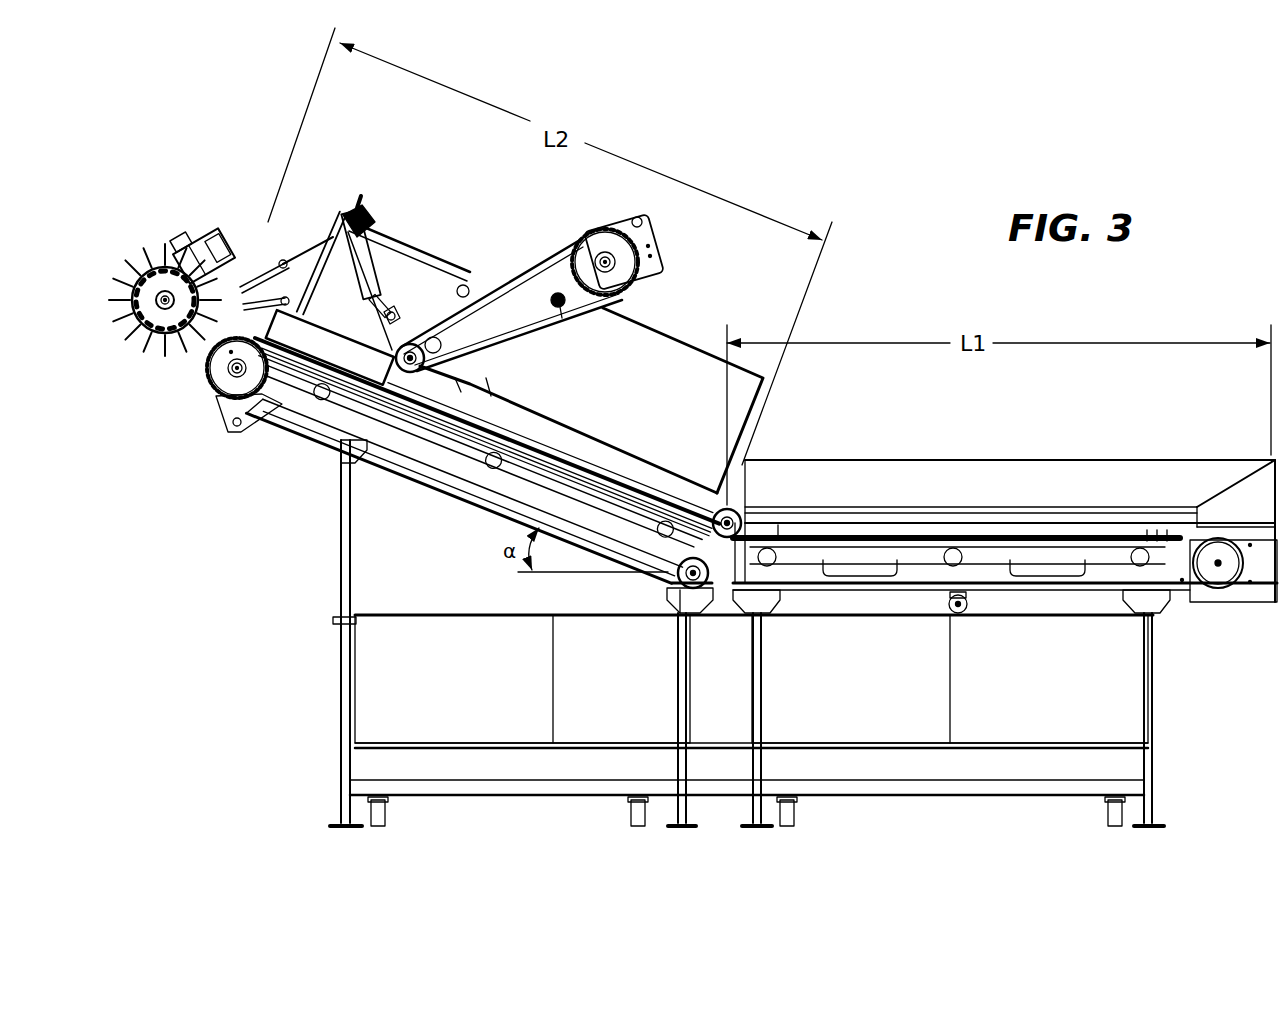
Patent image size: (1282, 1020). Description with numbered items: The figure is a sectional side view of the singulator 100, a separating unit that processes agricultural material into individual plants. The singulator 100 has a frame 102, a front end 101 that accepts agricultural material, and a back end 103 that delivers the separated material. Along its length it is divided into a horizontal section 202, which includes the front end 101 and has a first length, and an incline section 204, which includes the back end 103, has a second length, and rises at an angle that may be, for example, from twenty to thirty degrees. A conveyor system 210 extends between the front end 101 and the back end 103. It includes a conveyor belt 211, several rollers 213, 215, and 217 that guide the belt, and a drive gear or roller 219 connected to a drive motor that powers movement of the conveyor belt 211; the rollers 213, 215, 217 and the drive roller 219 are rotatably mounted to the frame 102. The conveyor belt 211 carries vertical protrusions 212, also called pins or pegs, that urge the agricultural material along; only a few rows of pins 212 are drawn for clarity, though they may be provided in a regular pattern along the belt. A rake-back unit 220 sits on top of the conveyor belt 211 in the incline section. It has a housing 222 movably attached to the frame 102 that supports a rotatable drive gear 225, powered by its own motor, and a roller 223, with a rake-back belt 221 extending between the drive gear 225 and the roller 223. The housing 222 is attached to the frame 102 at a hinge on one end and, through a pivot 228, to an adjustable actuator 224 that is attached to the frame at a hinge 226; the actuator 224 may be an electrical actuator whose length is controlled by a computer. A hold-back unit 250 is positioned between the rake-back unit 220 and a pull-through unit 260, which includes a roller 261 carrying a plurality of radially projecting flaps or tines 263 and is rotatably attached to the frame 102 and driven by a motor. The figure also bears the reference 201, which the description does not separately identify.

The singulator 100 is at (803, 153).
The front end 101 is at (1172, 302).
The frame 102 is at (362, 228).
The back end 103 is at (262, 150).
The side wall 201 is at (1028, 468).
The horizontal section 202 is at (1265, 840).
The incline section 204 is at (728, 840).
The conveyor system 210 is at (921, 187).
The conveyor belt 211 is at (328, 372).
The vertical protrusions 212 is at (1160, 516).
The roller 213 is at (1213, 593).
The roller 215 is at (693, 592).
The roller 217 is at (750, 507).
The drive gear or roller 219 is at (212, 390).
The rake-back unit 220 is at (466, 150).
The rake-back belt 221 is at (510, 280).
The housing 222 is at (650, 233).
The roller 223 is at (392, 370).
The adjustable actuator 224 is at (371, 260).
The drive gear 225 is at (566, 238).
The hinge 226 is at (340, 240).
The pivot 228 is at (393, 307).
The hold-back unit 250 is at (243, 258).
The pull-through unit 260 is at (142, 212).
The roller 261 is at (140, 313).
The flaps or tines 263 is at (143, 263).